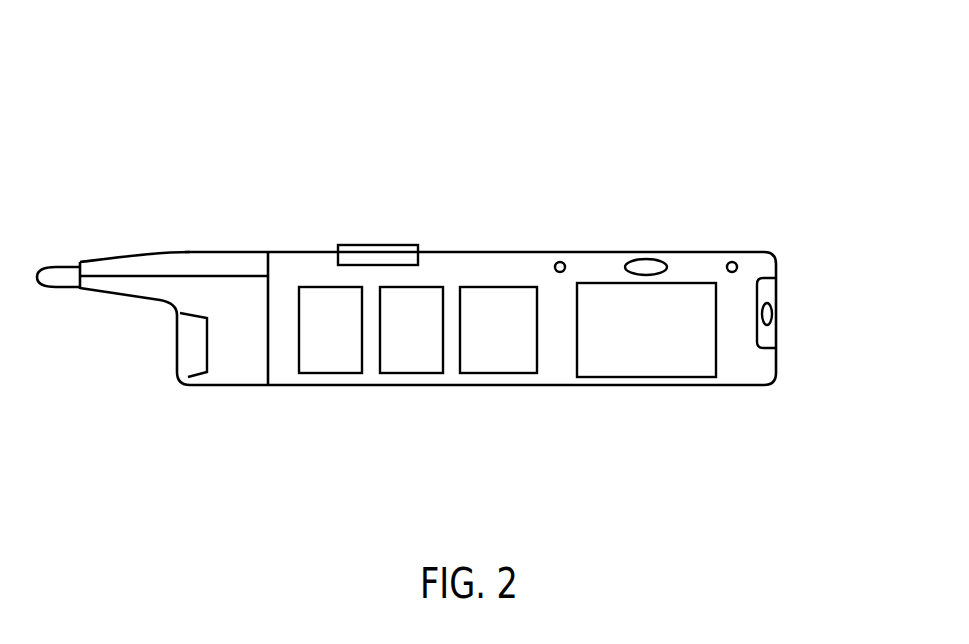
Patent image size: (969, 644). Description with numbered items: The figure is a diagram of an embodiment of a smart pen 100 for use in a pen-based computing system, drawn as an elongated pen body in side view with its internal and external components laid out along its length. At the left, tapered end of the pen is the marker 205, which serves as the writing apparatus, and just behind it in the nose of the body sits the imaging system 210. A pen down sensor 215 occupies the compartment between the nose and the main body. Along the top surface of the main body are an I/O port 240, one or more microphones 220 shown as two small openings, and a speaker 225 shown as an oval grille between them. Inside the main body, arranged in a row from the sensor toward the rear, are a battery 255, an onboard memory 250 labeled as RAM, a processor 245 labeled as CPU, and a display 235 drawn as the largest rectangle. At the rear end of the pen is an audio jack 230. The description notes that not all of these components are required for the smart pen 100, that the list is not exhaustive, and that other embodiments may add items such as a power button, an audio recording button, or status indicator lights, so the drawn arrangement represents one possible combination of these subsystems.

The smart pen 100 is at (171, 66).
The marker 205 is at (60, 273).
The imaging system 210 is at (193, 345).
The pen down sensor 215 is at (268, 325).
The microphone 220 is at (757, 206).
The speaker 225 is at (646, 262).
The audio jack 230 is at (865, 357).
The display 235 is at (648, 340).
The I/O port 240 is at (380, 258).
The processor 245 is at (497, 357).
The onboard memory 250 is at (417, 357).
The battery 255 is at (332, 357).